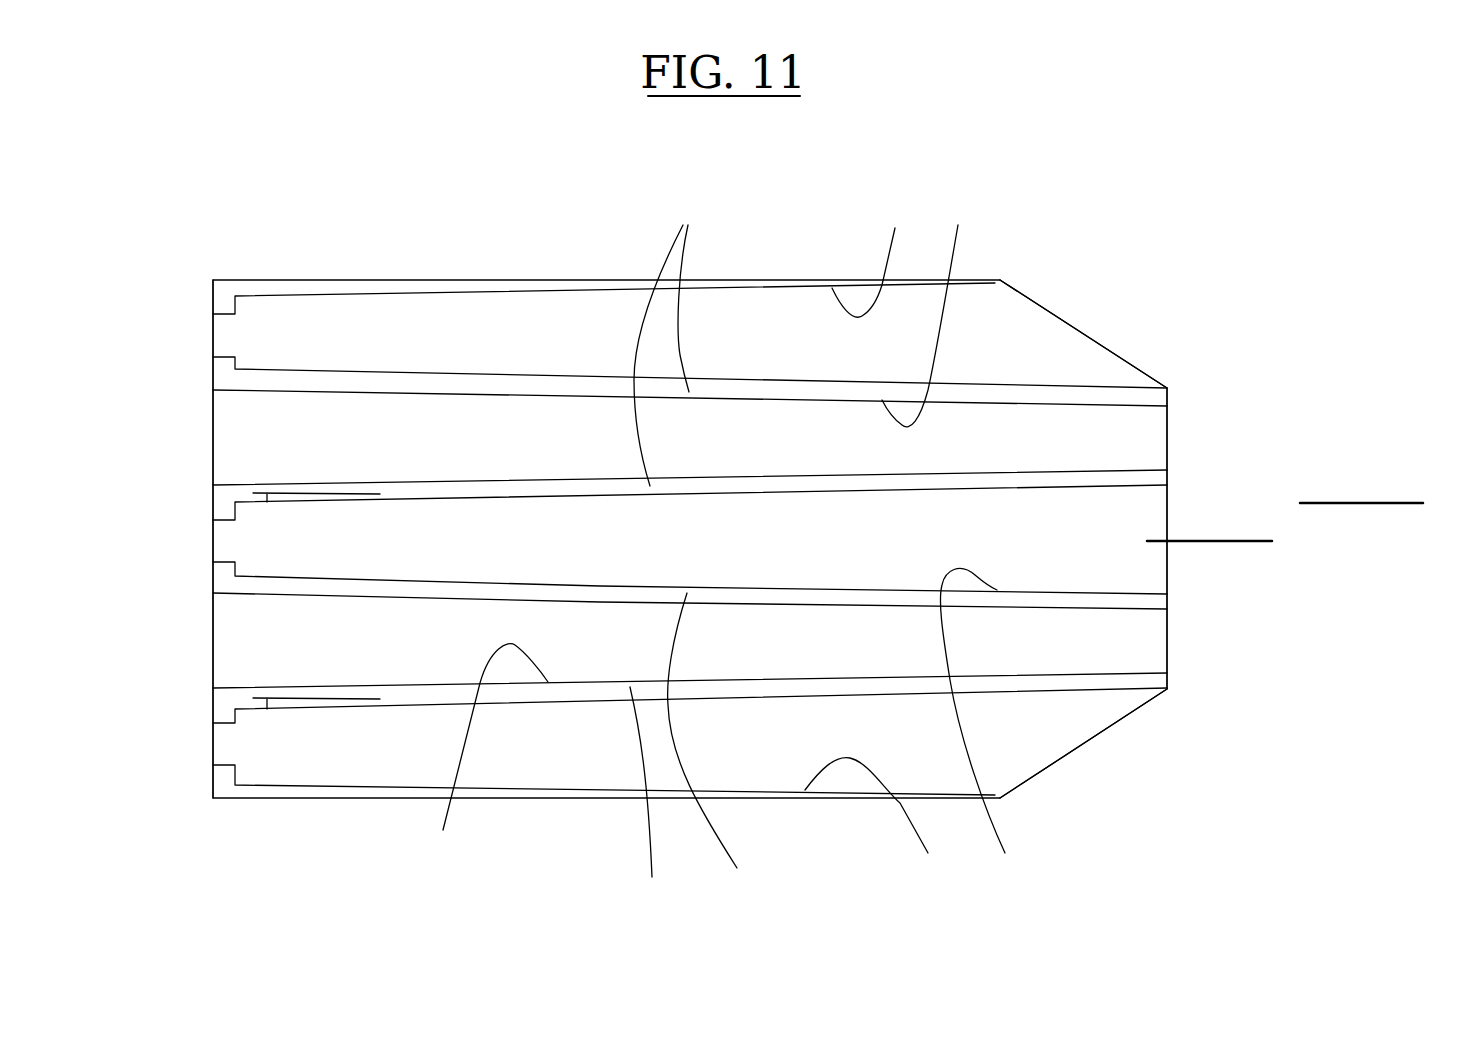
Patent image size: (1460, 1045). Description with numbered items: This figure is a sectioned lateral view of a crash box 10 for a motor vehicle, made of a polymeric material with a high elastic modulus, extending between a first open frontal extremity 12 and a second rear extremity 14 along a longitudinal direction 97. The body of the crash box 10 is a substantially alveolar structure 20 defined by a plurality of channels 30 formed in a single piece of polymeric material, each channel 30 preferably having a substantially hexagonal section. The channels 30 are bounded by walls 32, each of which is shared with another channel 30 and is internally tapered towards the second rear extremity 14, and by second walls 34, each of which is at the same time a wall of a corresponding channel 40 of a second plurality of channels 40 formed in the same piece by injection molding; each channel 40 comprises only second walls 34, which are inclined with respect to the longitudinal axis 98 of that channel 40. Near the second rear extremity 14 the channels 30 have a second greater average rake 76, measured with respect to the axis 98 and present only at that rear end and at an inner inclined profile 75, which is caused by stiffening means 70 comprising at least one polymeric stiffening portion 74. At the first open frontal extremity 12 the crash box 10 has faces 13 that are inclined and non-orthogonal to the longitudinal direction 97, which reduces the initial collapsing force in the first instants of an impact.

The crash box 10 is at (221, 196).
The first open frontal extremity 12 is at (1167, 652).
The faces 13 is at (1065, 318).
The second rear extremity 14 is at (213, 644).
The alveolar structure 20 is at (1195, 351).
The channels 30 is at (921, 544).
The walls 32 is at (742, 349).
The second walls 34 is at (697, 553).
The second plurality of channels 40 is at (700, 531).
The stiffening means 70 is at (390, 312).
The stiffening portion 74 is at (262, 378).
The inner inclined profile 75 is at (317, 501).
The second greater average rake 76 is at (263, 501).
The longitudinal direction 97 is at (1368, 504).
The longitudinal axis 98 is at (1233, 540).